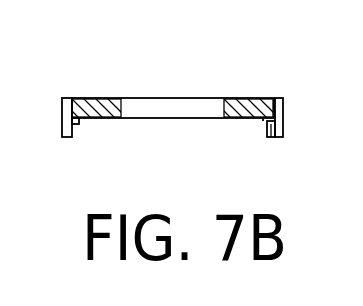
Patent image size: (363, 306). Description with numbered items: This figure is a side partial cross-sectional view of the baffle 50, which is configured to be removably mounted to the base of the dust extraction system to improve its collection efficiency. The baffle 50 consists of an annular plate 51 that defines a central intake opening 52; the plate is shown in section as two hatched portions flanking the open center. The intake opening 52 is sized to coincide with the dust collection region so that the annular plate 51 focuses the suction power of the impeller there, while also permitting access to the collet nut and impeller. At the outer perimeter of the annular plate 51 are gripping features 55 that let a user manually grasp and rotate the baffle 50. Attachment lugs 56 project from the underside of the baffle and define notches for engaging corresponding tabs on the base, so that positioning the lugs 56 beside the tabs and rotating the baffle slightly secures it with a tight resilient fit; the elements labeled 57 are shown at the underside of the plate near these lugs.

The baffle 50 is at (255, 98).
The annular plate 51 is at (108, 103).
The central intake opening 52 is at (122, 107).
The gripping features 55 is at (279, 110).
The attachment lugs 56 is at (272, 133).
The retaining lug 57 is at (77, 120).